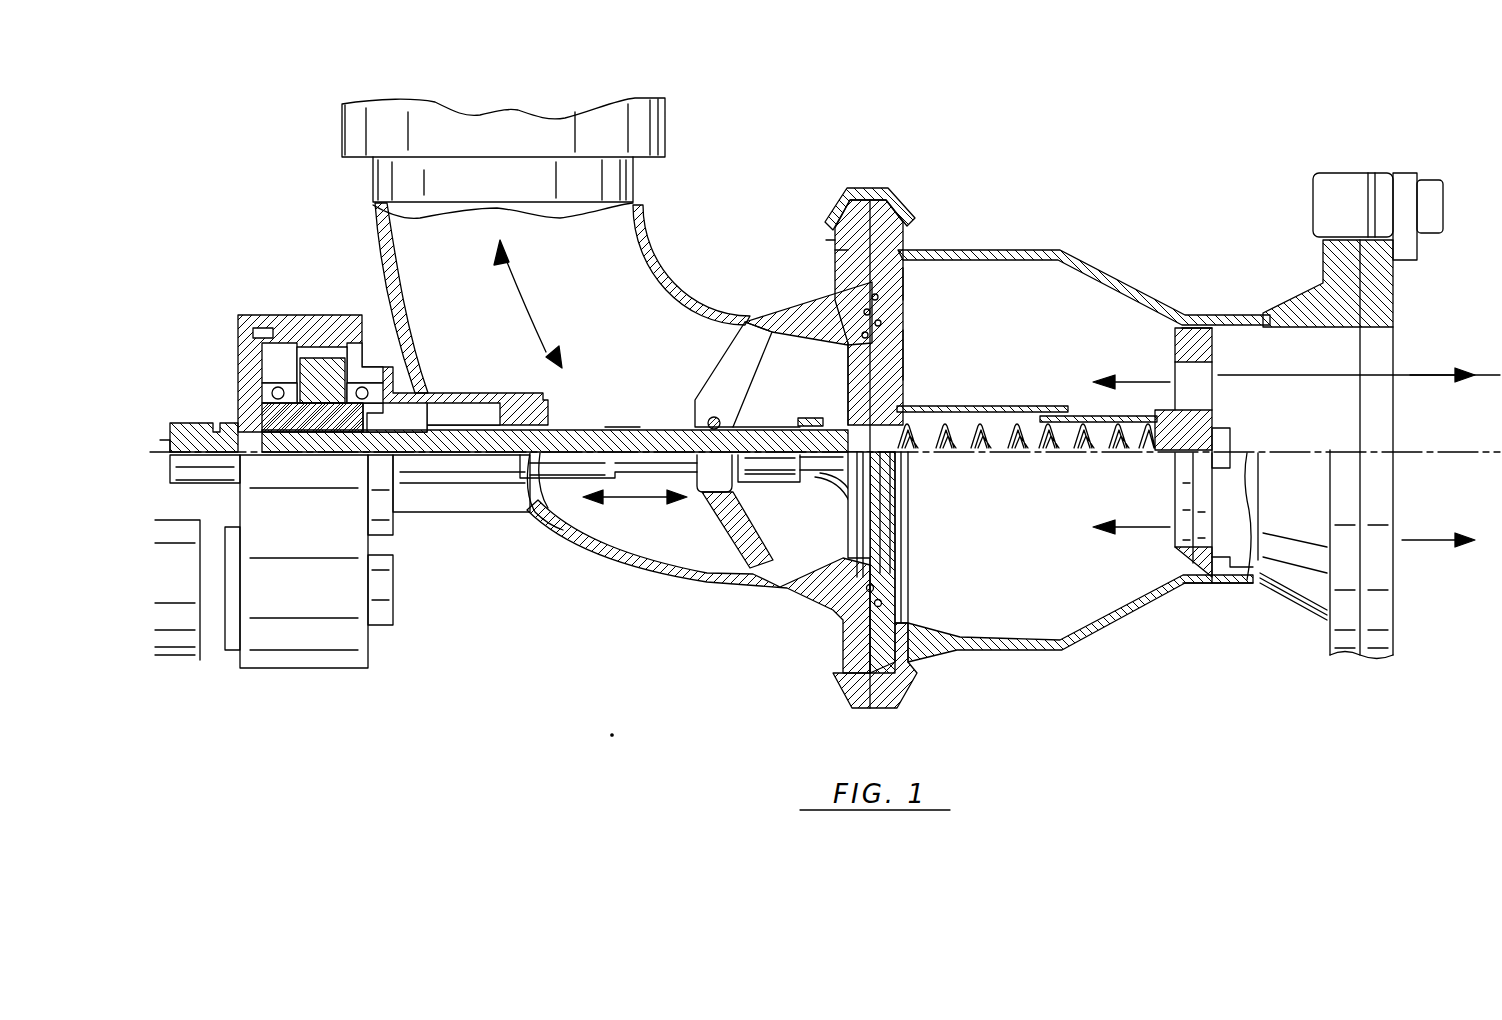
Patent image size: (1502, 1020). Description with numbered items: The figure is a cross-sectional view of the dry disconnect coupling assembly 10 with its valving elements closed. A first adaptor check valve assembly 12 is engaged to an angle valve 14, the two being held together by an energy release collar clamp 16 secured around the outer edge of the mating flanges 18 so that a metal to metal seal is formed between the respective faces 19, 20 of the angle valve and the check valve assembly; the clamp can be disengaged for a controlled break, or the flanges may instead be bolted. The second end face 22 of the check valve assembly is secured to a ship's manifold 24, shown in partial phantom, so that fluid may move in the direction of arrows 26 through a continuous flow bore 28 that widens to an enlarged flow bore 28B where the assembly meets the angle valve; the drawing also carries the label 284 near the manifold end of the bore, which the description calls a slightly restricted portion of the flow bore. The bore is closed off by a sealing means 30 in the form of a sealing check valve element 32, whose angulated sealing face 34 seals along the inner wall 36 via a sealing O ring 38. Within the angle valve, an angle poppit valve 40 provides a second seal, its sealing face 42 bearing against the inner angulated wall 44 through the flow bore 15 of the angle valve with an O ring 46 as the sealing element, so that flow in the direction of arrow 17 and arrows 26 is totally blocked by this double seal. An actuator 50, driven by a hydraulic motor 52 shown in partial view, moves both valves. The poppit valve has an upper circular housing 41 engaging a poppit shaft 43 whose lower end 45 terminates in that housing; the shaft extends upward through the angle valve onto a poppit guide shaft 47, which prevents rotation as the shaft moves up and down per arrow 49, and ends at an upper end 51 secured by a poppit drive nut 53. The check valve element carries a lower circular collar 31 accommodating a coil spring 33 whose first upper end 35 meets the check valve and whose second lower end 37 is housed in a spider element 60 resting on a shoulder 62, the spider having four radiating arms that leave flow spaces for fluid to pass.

The dry disconnect coupling assembly 10 is at (975, 211).
The first adaptor check valve assembly 12 is at (1064, 240).
The angle valve 14 is at (648, 220).
The flow bore of angle valve 15 is at (633, 366).
The energy release collar clamp 16 is at (864, 193).
The arrow 17 is at (540, 298).
The mating flanges 18 is at (893, 200).
The face of angle valve 19 is at (418, 344).
The face of check valve assembly 20 is at (835, 242).
The second end face 22 is at (1395, 300).
The ship's manifold 24 is at (1472, 429).
The arrows 26 is at (1415, 370).
The flow bore 28 is at (1000, 393).
The enlarged flow bore 28B is at (1000, 278).
The bore 284 is at (1356, 372).
The sealing means 30 is at (905, 362).
The lower circular collar 31 is at (918, 405).
The sealing check valve element 32 is at (890, 518).
The coil spring 33 is at (1030, 416).
The angulated sealing face 34 is at (905, 283).
The first upper end 35 is at (918, 440).
The inner wall 36 is at (838, 274).
The second lower end 37 is at (1217, 330).
The sealing O ring 38 is at (890, 563).
The angle poppit valve 40 is at (860, 372).
The upper circular housing 41 is at (785, 460).
The sealing face 42 is at (800, 298).
The poppit shaft 43 is at (620, 427).
The inner angulated wall 44 is at (850, 543).
The lower end 45 is at (845, 420).
The O ring 46 is at (847, 505).
The poppit guide shaft 47 is at (705, 500).
The arrow 49 is at (640, 500).
The actuator 50 is at (237, 306).
The upper end 51 is at (232, 405).
The hydraulic motor 52 is at (215, 640).
The poppit drive nut 53 is at (323, 355).
The spider element 60 is at (1205, 582).
The shoulder 62 is at (1220, 330).